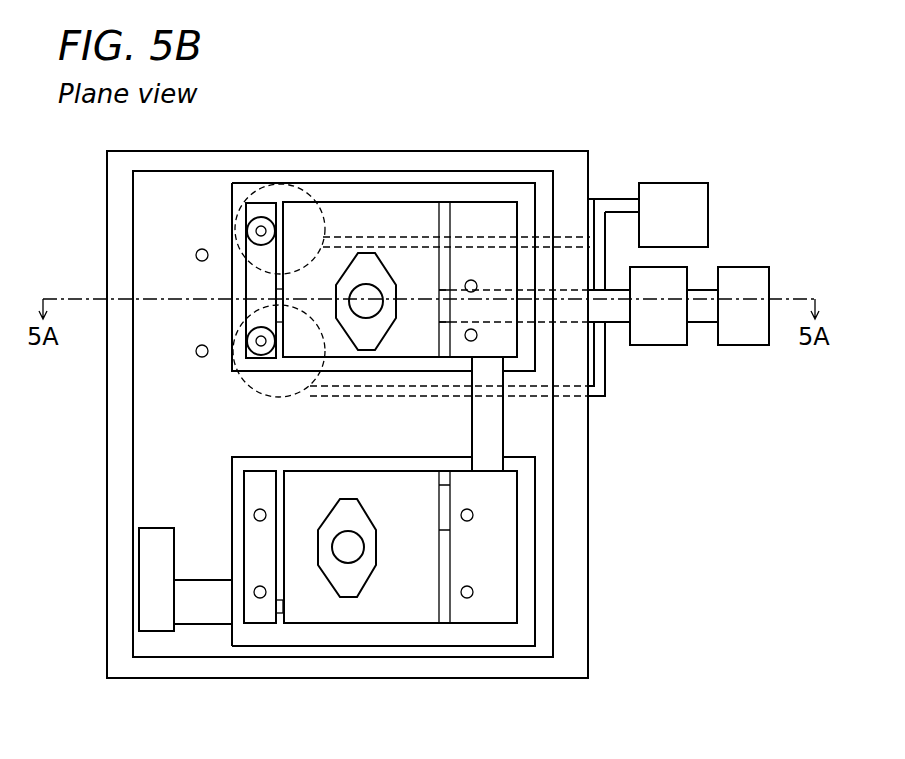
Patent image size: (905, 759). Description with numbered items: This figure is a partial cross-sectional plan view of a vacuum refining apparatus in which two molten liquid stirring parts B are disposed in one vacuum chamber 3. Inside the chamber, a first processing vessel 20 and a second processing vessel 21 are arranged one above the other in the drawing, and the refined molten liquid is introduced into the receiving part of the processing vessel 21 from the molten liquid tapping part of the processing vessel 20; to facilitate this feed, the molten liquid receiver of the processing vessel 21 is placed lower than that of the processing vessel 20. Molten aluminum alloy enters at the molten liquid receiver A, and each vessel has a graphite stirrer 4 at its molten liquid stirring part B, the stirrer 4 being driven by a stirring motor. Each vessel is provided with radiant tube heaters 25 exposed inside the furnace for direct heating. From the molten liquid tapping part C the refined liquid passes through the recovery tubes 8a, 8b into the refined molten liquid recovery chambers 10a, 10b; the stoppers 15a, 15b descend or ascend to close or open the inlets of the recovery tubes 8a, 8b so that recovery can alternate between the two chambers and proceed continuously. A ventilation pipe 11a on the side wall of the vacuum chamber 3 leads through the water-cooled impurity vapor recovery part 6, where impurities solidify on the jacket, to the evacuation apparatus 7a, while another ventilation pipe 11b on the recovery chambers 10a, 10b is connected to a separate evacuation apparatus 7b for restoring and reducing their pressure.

The vacuum chamber 3 is at (567, 591).
The processing vessel 20 is at (527, 503).
The processing vessel 21 is at (452, 196).
The stirrer 4 is at (397, 705).
The recovery tube 8a is at (247, 343).
The recovery tube 8b is at (264, 217).
The refined molten liquid recovery chamber 10a is at (277, 305).
The refined molten liquid recovery chamber 10b is at (238, 192).
The stopper 15a is at (253, 338).
The stopper 15b is at (251, 230).
The ventilation pipe 11a is at (605, 313).
The ventilation pipe 11b is at (608, 198).
The impurity vapor recovery part 6 is at (677, 345).
The evacuation apparatus 7a is at (763, 345).
The evacuation apparatus 7b is at (680, 183).
The radiant tube heater 25 is at (513, 708).
The molten liquid receiver A is at (152, 575).
The molten liquid stirring part B is at (348, 708).
The molten liquid tapping part C is at (255, 286).